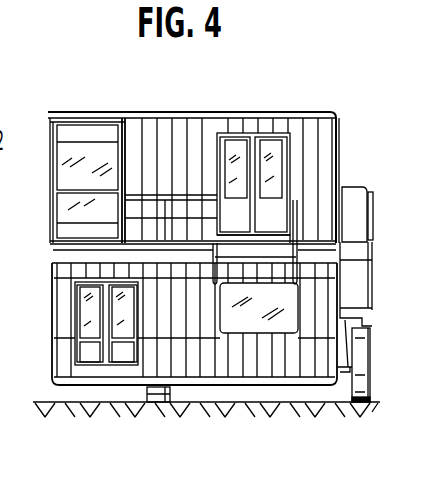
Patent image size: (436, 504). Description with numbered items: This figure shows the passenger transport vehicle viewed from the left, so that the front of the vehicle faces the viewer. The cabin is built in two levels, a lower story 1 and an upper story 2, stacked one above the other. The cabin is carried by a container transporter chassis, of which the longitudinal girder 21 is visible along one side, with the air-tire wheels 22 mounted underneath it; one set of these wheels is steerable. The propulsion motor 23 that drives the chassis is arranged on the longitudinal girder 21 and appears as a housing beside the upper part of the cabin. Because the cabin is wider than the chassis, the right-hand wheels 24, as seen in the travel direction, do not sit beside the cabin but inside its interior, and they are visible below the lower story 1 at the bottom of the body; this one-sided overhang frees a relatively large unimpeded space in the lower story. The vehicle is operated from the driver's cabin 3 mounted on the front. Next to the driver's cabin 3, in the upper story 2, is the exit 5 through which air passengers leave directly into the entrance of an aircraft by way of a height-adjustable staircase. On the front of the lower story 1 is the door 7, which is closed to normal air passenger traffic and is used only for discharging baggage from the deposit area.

The lower story 1 is at (52, 315).
The upper story 2 is at (50, 172).
The driver's cabin 3 is at (80, 130).
The exit 5 is at (238, 143).
The door 7 is at (95, 357).
The longitudinal girder 21 is at (366, 298).
The air-tire wheels 22 is at (360, 392).
The propulsion motor 23 is at (354, 200).
The right-hand wheels 24 is at (161, 395).